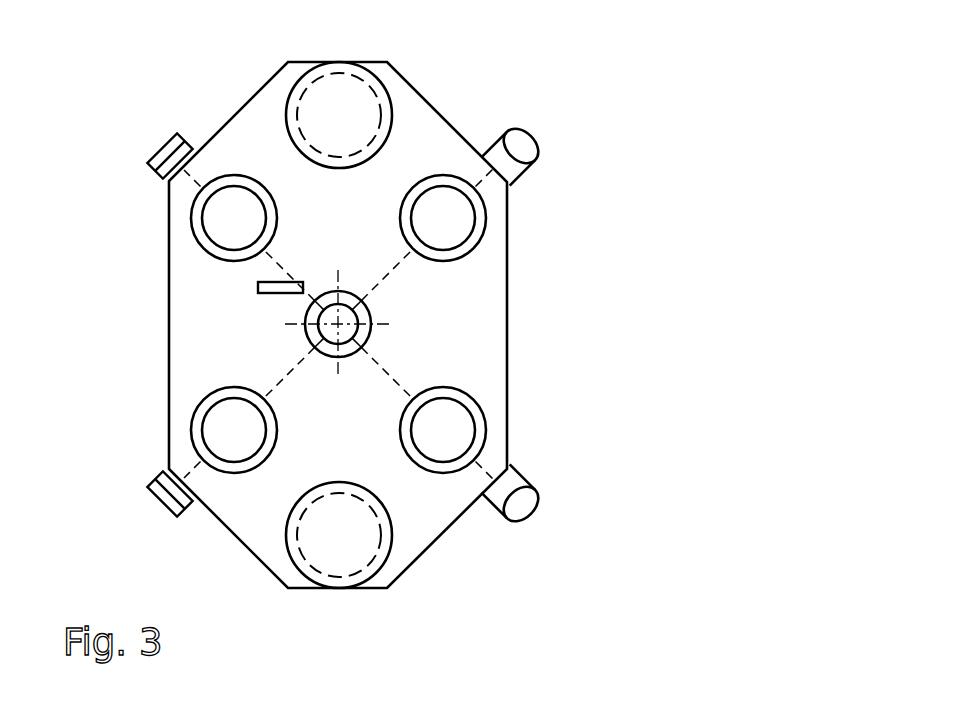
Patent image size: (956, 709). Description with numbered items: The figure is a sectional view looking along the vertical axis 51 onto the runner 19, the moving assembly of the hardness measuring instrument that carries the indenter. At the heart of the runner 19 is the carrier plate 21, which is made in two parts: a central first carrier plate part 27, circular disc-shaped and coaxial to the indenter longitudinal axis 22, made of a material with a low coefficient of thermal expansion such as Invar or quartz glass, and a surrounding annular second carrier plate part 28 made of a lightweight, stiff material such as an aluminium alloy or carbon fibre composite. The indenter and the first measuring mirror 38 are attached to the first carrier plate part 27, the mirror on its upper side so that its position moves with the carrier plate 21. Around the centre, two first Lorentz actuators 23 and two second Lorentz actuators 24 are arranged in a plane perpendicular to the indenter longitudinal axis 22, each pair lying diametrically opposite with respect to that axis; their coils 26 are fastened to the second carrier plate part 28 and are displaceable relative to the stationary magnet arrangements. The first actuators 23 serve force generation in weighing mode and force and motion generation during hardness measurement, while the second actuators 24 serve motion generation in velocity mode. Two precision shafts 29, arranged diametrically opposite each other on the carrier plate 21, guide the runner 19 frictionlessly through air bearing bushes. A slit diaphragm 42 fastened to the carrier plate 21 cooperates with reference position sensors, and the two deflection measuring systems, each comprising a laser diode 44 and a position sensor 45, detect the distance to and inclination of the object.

The runner 19 is at (577, 163).
The carrier plate 21 is at (507, 285).
The indenter longitudinal axis 22 is at (358, 328).
The first Lorentz actuator 23 is at (191, 216).
The second Lorentz actuator 24 is at (191, 430).
The coil 26 is at (460, 218).
The first carrier plate part 27 is at (364, 328).
The second carrier plate part 28 is at (482, 373).
The precision shaft 29 is at (318, 110).
The first measuring mirror 38 is at (359, 316).
The slit diaphragm 42 is at (258, 288).
The laser diode 44 is at (523, 144).
The position sensor 45 is at (167, 152).
The vertical axis 51 is at (336, 324).